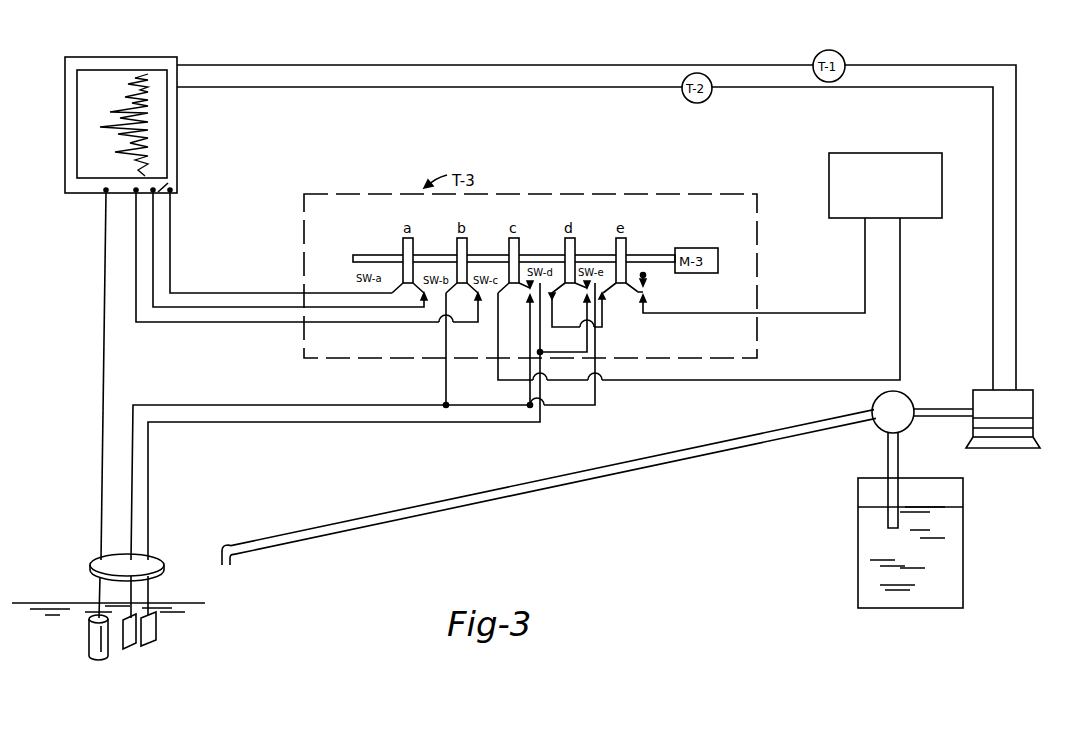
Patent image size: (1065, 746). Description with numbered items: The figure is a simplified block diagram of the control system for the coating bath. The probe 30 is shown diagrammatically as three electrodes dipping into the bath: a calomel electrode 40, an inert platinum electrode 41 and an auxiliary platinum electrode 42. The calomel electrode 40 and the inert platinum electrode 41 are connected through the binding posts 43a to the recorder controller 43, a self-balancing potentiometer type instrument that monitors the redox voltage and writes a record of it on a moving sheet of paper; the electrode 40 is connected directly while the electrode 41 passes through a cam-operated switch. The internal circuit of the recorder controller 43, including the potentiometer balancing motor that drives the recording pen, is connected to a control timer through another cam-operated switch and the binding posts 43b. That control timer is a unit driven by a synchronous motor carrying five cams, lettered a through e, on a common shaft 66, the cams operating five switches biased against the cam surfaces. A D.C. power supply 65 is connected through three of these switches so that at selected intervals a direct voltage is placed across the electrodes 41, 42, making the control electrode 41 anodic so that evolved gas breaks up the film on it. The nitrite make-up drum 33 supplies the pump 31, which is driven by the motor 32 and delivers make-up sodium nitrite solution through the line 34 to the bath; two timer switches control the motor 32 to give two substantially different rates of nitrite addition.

The recorder controller 43 is at (66, 96).
The binding posts 43a is at (134, 190).
The binding posts 43b is at (172, 188).
The D.C. power supply 65 is at (860, 153).
The common shaft 66 is at (370, 256).
The probe 30 is at (158, 562).
The pump 31 is at (872, 410).
The motor 32 is at (973, 395).
The nitrite make-up drum 33 is at (964, 562).
The line 34 is at (565, 484).
The calomel electrode 40 is at (89, 636).
The inert platinum electrode 41 is at (125, 650).
The auxiliary platinum electrode 42 is at (156, 640).